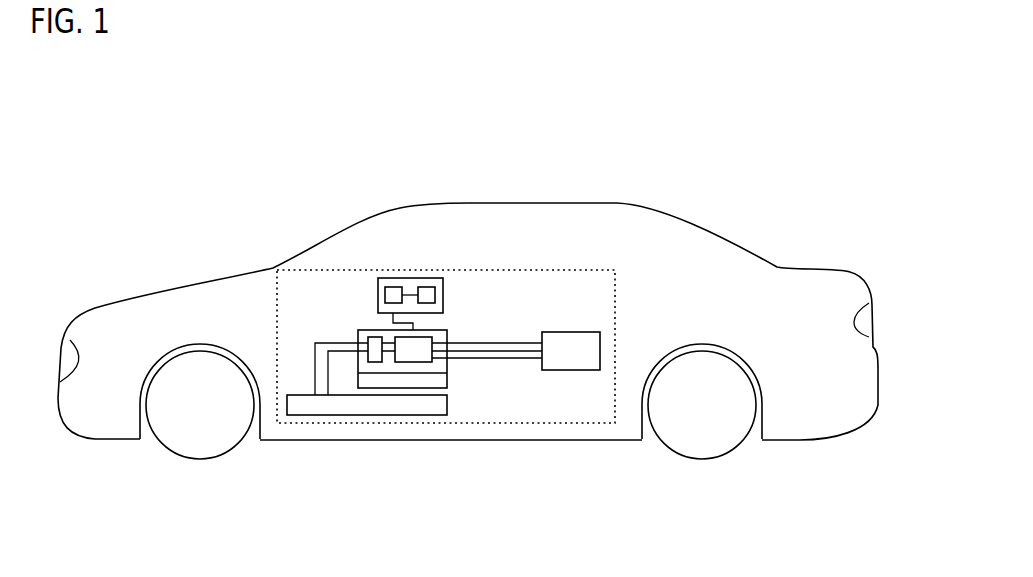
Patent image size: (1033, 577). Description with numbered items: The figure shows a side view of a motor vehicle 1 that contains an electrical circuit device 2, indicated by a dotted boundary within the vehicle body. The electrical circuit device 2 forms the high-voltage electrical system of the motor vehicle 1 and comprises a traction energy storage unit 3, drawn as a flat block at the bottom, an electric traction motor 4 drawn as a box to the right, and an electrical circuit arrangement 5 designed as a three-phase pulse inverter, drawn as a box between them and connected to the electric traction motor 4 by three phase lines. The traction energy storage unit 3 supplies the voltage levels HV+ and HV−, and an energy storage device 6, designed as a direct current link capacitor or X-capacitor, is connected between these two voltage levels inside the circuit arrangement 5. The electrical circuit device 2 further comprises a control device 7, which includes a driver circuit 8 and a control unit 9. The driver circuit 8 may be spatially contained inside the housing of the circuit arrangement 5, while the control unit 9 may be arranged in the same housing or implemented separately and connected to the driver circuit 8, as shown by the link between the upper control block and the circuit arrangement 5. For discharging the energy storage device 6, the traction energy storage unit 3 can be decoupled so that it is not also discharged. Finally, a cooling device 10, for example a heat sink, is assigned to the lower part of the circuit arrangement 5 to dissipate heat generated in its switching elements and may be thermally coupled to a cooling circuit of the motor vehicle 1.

The motor vehicle 1 is at (695, 190).
The electrical circuit device 2 is at (278, 282).
The traction energy storage unit 3 is at (427, 408).
The electric traction motor 4 is at (600, 332).
The electrical circuit arrangement 5 is at (445, 329).
The energy storage device 6 is at (373, 337).
The control device 7 is at (413, 278).
The driver circuit 8 is at (394, 278).
The control unit 9 is at (431, 279).
The cooling device 10 is at (447, 388).